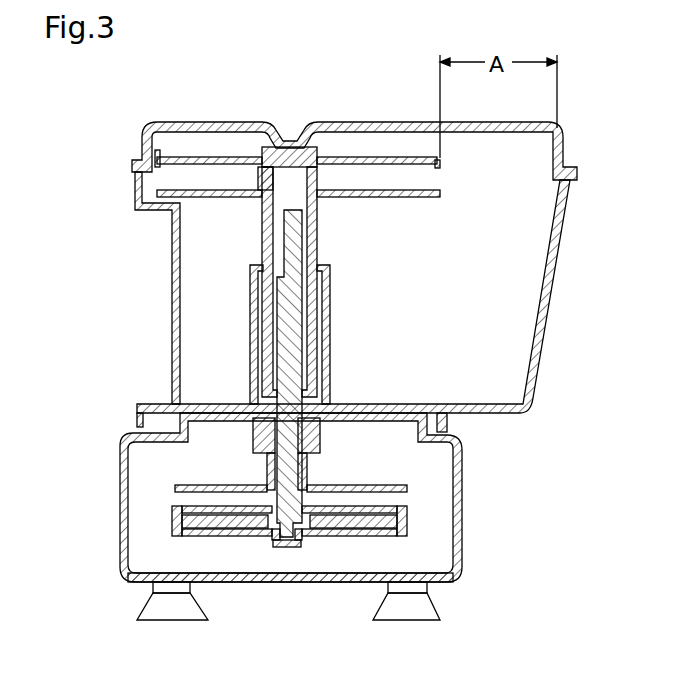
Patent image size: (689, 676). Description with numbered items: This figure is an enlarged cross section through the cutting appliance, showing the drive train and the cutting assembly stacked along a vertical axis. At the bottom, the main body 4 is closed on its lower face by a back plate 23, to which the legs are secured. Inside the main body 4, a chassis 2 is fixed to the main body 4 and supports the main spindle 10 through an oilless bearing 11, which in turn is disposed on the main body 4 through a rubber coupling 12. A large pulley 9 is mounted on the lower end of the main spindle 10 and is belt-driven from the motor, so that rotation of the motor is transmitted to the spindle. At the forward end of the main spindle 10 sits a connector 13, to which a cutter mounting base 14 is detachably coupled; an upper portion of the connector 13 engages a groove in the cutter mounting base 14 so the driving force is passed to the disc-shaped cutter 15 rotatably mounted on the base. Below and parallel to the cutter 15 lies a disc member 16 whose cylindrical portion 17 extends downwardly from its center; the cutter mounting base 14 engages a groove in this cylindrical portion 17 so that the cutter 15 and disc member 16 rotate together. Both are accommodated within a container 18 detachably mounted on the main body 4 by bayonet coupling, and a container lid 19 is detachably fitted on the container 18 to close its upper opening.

The chassis 2 is at (304, 474).
The main body 4 is at (458, 492).
The large pulley 9 is at (345, 537).
The main spindle 10 is at (289, 548).
The oilless bearing 11 is at (318, 441).
The rubber coupling 12 is at (518, 408).
The connector 13 is at (302, 279).
The cutter mounting base 14 is at (291, 145).
The disc-shaped cutter 15 is at (353, 156).
The disc member 16 is at (425, 196).
The cylindrical portion 17 is at (318, 243).
The container 18 is at (172, 334).
The container lid 19 is at (250, 124).
The back plate 23 is at (215, 582).